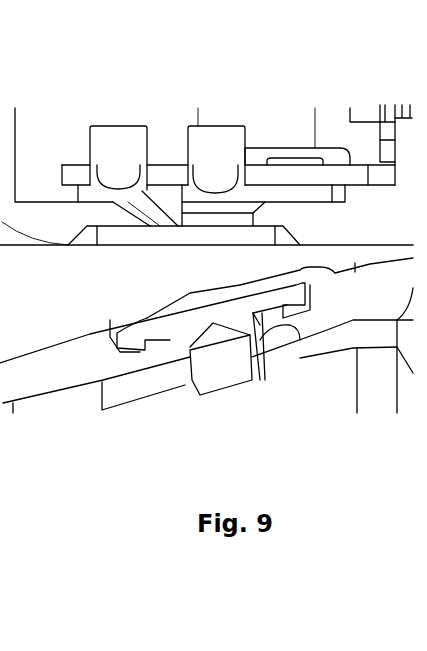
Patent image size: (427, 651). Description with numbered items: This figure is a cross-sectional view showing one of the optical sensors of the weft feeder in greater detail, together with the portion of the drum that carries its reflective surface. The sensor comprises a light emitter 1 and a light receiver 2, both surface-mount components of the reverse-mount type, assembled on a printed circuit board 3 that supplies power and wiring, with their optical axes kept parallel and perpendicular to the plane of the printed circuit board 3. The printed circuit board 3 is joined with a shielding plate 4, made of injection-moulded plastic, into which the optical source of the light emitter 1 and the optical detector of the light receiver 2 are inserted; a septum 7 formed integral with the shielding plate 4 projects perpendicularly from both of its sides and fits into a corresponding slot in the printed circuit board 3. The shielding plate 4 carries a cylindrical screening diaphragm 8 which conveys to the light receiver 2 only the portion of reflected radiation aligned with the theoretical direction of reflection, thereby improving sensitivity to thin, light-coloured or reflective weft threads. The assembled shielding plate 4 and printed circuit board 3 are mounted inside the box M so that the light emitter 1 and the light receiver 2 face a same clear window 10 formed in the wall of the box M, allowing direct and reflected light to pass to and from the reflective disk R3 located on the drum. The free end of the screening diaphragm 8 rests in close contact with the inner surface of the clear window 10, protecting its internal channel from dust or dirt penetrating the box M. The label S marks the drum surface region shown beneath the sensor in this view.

The light emitter 1 is at (215, 142).
The light receiver 2 is at (122, 140).
The printed circuit board 3 is at (257, 177).
The shielding plate 4 is at (307, 188).
The septum 7 is at (163, 177).
The cylindrical screening diaphragm 8 is at (146, 207).
The clear window 10 is at (211, 237).
The box M is at (367, 243).
The slide S is at (92, 360).
The reflective disk R3 is at (197, 317).